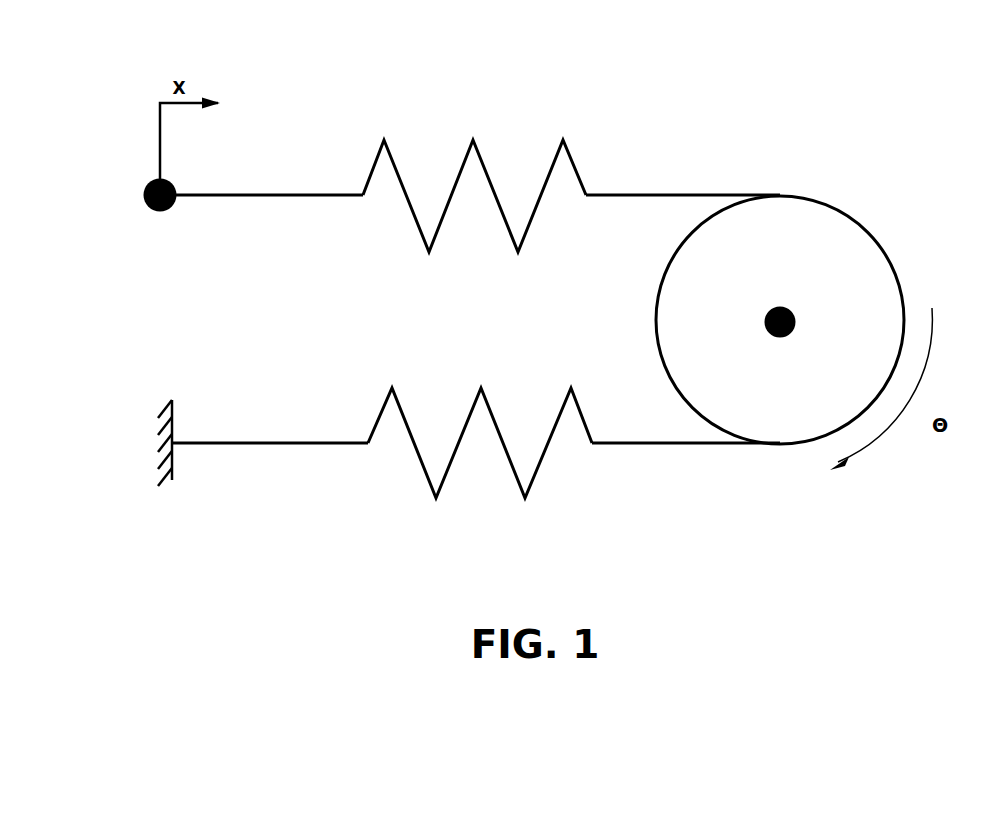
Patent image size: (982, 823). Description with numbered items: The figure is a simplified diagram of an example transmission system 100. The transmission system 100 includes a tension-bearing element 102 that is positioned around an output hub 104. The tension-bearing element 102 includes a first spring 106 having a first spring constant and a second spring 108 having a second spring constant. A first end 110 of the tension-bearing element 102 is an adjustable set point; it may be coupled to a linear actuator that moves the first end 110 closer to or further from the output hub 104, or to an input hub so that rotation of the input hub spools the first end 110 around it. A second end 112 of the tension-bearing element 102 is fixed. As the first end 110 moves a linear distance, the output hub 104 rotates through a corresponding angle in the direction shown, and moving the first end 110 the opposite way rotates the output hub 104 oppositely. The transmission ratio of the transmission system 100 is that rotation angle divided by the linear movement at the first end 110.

The transmission system 100 is at (818, 62).
The tension-bearing element 102 is at (268, 197).
The output hub 104 is at (827, 202).
The first spring 106 is at (570, 153).
The second spring 108 is at (420, 467).
The first end 110 is at (145, 204).
The second end 112 is at (175, 417).